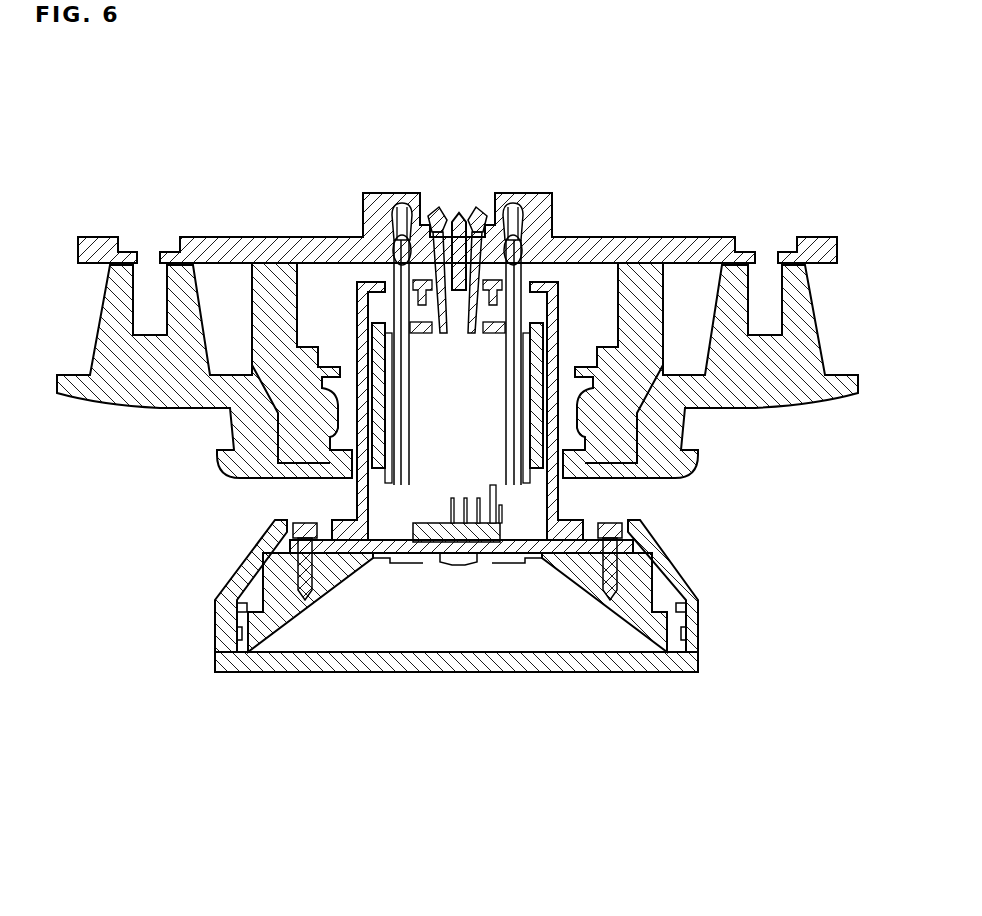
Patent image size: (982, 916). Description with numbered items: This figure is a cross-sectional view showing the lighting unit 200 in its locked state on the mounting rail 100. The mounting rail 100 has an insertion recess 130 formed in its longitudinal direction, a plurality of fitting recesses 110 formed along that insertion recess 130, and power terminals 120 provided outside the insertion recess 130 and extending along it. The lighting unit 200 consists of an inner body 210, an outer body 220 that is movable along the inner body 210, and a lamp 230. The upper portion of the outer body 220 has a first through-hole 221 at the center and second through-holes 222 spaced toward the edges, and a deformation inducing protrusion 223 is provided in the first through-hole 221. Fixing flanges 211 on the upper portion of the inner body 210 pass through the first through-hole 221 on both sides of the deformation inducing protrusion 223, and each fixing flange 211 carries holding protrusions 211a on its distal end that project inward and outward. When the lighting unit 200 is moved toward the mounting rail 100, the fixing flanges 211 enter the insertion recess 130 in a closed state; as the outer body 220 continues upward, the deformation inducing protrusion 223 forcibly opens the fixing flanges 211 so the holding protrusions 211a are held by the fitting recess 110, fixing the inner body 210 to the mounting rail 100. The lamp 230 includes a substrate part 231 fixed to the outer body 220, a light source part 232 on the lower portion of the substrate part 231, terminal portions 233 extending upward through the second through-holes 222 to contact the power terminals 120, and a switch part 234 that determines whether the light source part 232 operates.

The mounting rail 100 is at (677, 237).
The fitting recess 110 is at (417, 203).
The power terminal 120 is at (518, 208).
The insertion recess 130 is at (437, 206).
The lighting unit 200 is at (529, 641).
The inner body 210 is at (375, 405).
The fixing flange 211 is at (398, 255).
The holding protrusion 211a is at (477, 210).
The outer body 220 is at (575, 523).
The first through-hole 221 is at (653, 372).
The second through-hole 222 is at (518, 250).
The deformation inducing protrusion 223 is at (457, 213).
The lamp 230 is at (550, 673).
The substrate part 231 is at (407, 553).
The light source part 232 is at (455, 566).
The terminal portion 233 is at (398, 452).
The switch part 234 is at (627, 664).